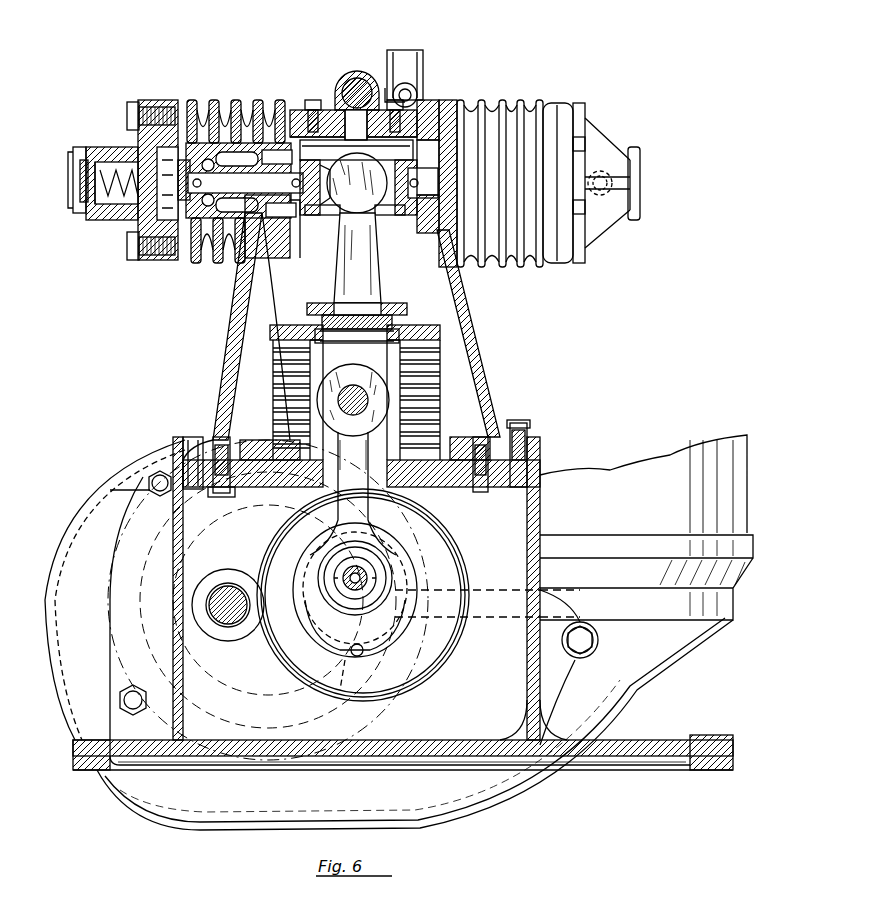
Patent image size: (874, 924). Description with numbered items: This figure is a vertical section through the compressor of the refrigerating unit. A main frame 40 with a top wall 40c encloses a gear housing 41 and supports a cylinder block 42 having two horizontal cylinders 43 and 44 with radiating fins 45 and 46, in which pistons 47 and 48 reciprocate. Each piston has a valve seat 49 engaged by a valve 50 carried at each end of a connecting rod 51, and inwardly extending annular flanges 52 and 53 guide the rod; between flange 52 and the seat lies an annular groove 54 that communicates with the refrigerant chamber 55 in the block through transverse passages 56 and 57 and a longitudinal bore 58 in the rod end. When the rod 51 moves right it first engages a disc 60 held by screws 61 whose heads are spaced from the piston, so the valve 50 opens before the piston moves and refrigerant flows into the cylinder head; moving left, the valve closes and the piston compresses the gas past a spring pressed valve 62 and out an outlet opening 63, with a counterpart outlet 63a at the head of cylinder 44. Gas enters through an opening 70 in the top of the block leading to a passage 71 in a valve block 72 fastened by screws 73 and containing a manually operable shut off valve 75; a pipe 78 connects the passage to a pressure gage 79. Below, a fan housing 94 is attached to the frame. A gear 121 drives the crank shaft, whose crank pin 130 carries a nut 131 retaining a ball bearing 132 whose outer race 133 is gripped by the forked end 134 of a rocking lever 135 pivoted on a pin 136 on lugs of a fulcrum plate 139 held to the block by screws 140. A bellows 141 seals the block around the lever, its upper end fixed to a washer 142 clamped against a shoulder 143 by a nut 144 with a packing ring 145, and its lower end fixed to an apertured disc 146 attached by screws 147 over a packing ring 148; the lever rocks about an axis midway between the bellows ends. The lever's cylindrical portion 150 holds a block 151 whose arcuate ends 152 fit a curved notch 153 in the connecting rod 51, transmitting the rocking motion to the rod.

The main frame 40 is at (535, 745).
The top wall 40c is at (528, 470).
The gear housing 41 is at (395, 752).
The cylinder block 42 is at (478, 330).
The cylinder 43 is at (170, 150).
The cylinder 44 is at (430, 150).
The radiating fins 45 is at (200, 240).
The radiating fins 46 is at (516, 250).
The piston 47 is at (236, 150).
The piston 48 is at (452, 150).
The valve seat 49 is at (150, 150).
The valve 50 is at (176, 198).
The connecting rod 51 is at (312, 206).
The annular flange 52 is at (207, 160).
The annular flange 53 is at (268, 148).
The annular groove 54 is at (178, 258).
The refrigerant chamber 55 is at (258, 300).
The transverse passage 56 is at (308, 158).
The transverse passage 57 is at (201, 183).
The longitudinally extending bore 58 is at (255, 240).
The disc 60 is at (282, 200).
The screws 61 is at (300, 240).
The spring pressed valve 62 is at (118, 214).
The outlet opening 63 is at (112, 170).
The outlet opening 63a is at (604, 172).
The opening 70 is at (365, 130).
The passage 71 is at (360, 80).
The valve block 72 is at (340, 75).
The screws 73 is at (313, 98).
The manually operable valve 75 is at (365, 85).
The pipe 78 is at (415, 88).
The pressure gage 79 is at (408, 50).
The fan housing 94 is at (190, 800).
The gear 121 is at (462, 645).
The crank pin 130 is at (392, 572).
The nut 131 is at (370, 580).
The ball bearing 132 is at (375, 555).
The outer race 133 is at (364, 656).
The forked end 134 is at (310, 625).
The rocking lever 135 is at (340, 460).
The pin 136 is at (368, 400).
The fulcrum plate 139 is at (518, 484).
The screws 140 is at (215, 496).
The bellows 141 is at (272, 385).
The washer 142 is at (300, 326).
The shoulder 143 is at (366, 315).
The nut 144 is at (392, 300).
The packing ring 145 is at (400, 316).
The apertured disc 146 is at (256, 498).
The screws 147 is at (482, 478).
The packing ring 148 is at (478, 432).
The cylindrical portion 150 is at (376, 212).
The block 151 is at (357, 218).
The arcuate ends 152 is at (368, 190).
The notch 153 is at (328, 210).